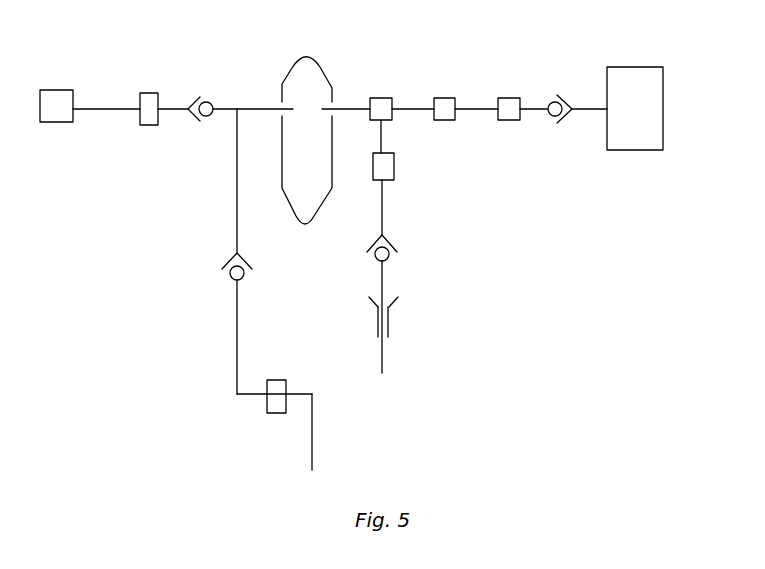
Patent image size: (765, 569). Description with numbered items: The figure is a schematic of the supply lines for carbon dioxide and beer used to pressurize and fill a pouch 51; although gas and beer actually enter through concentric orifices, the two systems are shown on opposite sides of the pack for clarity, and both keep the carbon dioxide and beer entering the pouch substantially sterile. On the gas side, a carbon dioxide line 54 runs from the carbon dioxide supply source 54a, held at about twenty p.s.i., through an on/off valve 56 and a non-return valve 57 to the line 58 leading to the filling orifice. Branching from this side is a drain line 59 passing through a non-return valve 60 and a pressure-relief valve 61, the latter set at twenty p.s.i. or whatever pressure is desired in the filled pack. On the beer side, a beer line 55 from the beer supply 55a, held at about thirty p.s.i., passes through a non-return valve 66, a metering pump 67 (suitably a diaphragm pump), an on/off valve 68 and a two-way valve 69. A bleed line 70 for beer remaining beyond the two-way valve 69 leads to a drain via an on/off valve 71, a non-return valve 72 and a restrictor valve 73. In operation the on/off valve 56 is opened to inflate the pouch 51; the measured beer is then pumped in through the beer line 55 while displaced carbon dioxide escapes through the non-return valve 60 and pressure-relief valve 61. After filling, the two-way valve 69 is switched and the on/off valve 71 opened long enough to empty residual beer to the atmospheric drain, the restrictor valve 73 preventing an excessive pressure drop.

The pouch 51 is at (312, 77).
The carbon dioxide line 54 is at (103, 109).
The carbon dioxide supply source 54a is at (62, 106).
The beer line 55 is at (588, 109).
The beer supply 55a is at (663, 109).
The on/off valve 56 is at (149, 125).
The non-return valve 57 is at (206, 102).
The line to orifice 58 is at (257, 112).
The drain line 59 is at (312, 430).
The non-return valve 60 is at (232, 280).
The pressure-relief valve 61 is at (273, 403).
The non-return valve 66 is at (550, 117).
The metering pump 67 is at (509, 98).
The on/off valve 68 is at (445, 98).
The 2-way valve 69 is at (381, 98).
The bleed line 70 is at (383, 141).
The on/off valve 71 is at (393, 177).
The non-return valve 72 is at (387, 260).
The restrictor valve 73 is at (388, 322).